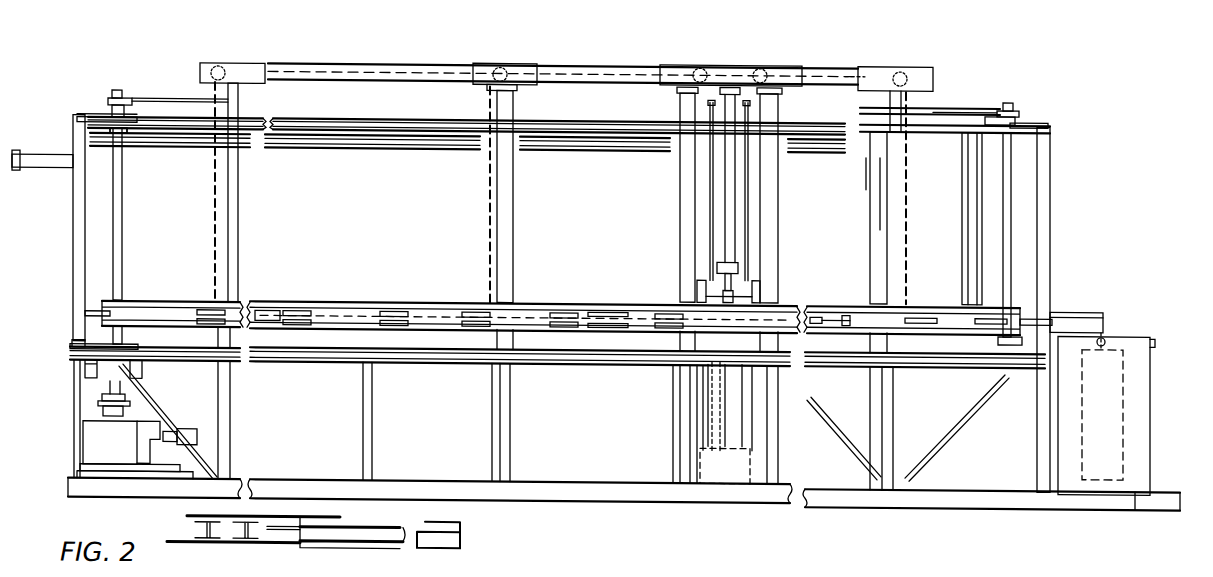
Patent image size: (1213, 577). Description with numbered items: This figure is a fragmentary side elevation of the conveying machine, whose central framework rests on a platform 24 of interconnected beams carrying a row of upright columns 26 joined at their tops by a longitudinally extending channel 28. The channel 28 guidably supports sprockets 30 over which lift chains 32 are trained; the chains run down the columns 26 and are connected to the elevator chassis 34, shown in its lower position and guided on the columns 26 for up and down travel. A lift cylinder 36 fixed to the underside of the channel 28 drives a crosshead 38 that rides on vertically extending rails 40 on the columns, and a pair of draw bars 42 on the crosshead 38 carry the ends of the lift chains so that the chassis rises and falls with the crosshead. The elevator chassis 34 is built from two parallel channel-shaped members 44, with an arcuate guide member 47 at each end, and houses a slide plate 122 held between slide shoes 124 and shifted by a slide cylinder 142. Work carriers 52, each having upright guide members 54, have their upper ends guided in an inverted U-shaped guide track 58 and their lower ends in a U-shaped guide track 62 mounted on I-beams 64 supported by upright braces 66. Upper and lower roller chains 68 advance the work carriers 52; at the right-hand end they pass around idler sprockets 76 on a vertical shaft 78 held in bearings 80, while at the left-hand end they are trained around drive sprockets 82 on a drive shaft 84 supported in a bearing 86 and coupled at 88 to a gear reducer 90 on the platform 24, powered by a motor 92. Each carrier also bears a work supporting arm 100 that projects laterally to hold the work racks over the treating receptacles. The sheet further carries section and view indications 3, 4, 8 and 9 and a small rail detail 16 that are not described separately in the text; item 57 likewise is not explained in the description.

The platform 24 is at (70, 491).
The upright columns 26 is at (238, 213).
The longitudinally extending channel 28 is at (438, 67).
The sprockets 30 is at (236, 68).
The lift chains 32 is at (215, 172).
The elevator chassis 34 is at (548, 295).
The lift cylinder 36 is at (727, 183).
The crosshead 38 is at (737, 297).
The vertically extending rails 40 is at (705, 380).
The draw bars 42 is at (703, 217).
The channel-shaped members 44 is at (163, 300).
The arcuate guide member 47 is at (98, 312).
The work carriers 52 is at (62, 236).
The channel-shaped upright guide members 54 is at (880, 195).
The guide post 57 is at (858, 174).
The inverted U-shaped guide track 58 is at (415, 121).
The U-shaped guide track 62 is at (558, 347).
The I-beams 64 is at (324, 401).
The upright braces 66 is at (372, 415).
The roller chains 68 is at (78, 118).
The idler sprockets 76 is at (1042, 125).
The vertically extending shaft 78 is at (1012, 163).
The bearings 80 is at (1022, 118).
The drive sprockets 82 is at (95, 113).
The drive shaft 84 is at (115, 183).
The bearing 86 is at (115, 88).
The coupling 88 is at (105, 405).
The gear reducer 90 is at (93, 430).
The motor 92 is at (190, 435).
The work supporting arm 100 is at (28, 138).
The slide plate 122 is at (610, 318).
The slide shoes 124 is at (588, 303).
The slide cylinder 142 is at (325, 300).
The section line 3- 3 is at (640, 50).
The section line 4- 4 is at (845, 262).
The section line 8- 8 is at (460, 342).
The view arrow 9 is at (362, 247).
The rail section detail 16 is at (313, 533).